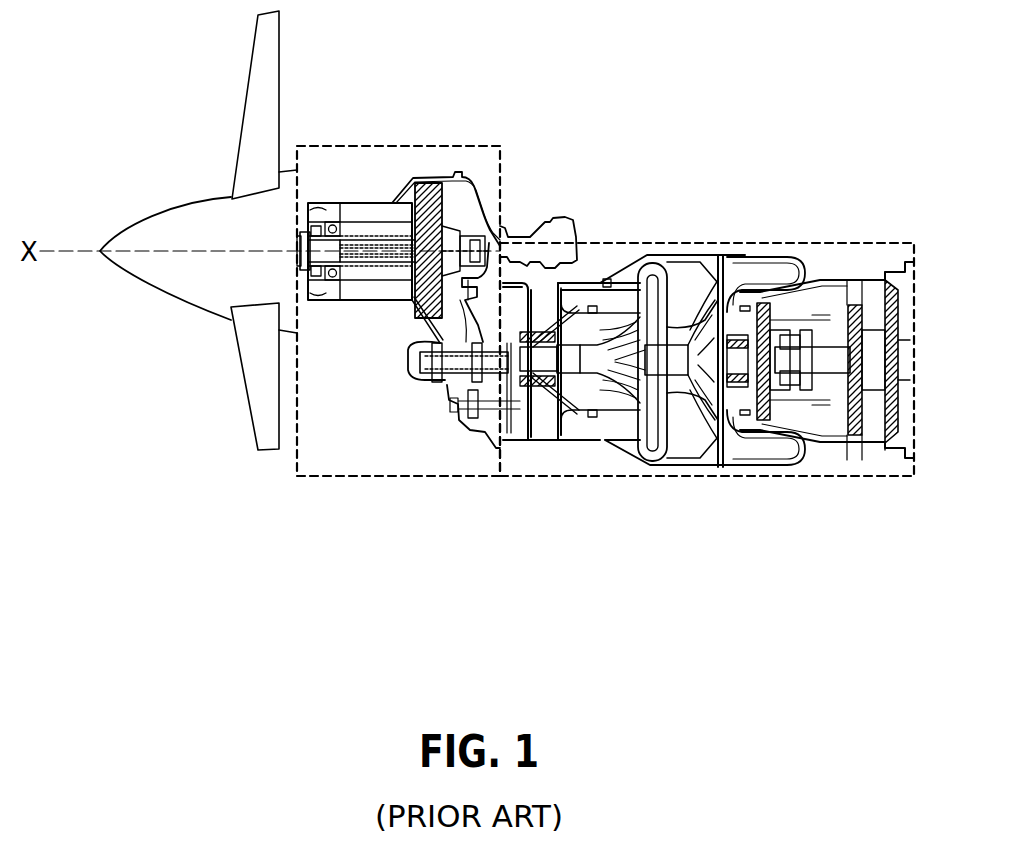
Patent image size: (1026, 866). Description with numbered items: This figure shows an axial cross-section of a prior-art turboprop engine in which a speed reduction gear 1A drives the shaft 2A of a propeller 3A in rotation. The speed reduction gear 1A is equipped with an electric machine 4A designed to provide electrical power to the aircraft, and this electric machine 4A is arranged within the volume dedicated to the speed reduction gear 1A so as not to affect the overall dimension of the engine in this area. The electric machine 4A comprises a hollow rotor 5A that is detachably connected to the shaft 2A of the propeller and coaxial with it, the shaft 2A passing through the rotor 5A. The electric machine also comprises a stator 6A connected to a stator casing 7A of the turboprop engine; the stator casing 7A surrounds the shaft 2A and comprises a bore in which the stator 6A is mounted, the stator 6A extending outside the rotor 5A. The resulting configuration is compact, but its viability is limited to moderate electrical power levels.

The speed reduction gear 1A is at (500, 492).
The shaft of the propeller 2A is at (347, 232).
The propeller 3A is at (178, 204).
The electric machine 4A is at (368, 279).
The hollow rotor 5A is at (385, 227).
The stator 6A is at (388, 292).
The stator casing 7A is at (437, 178).